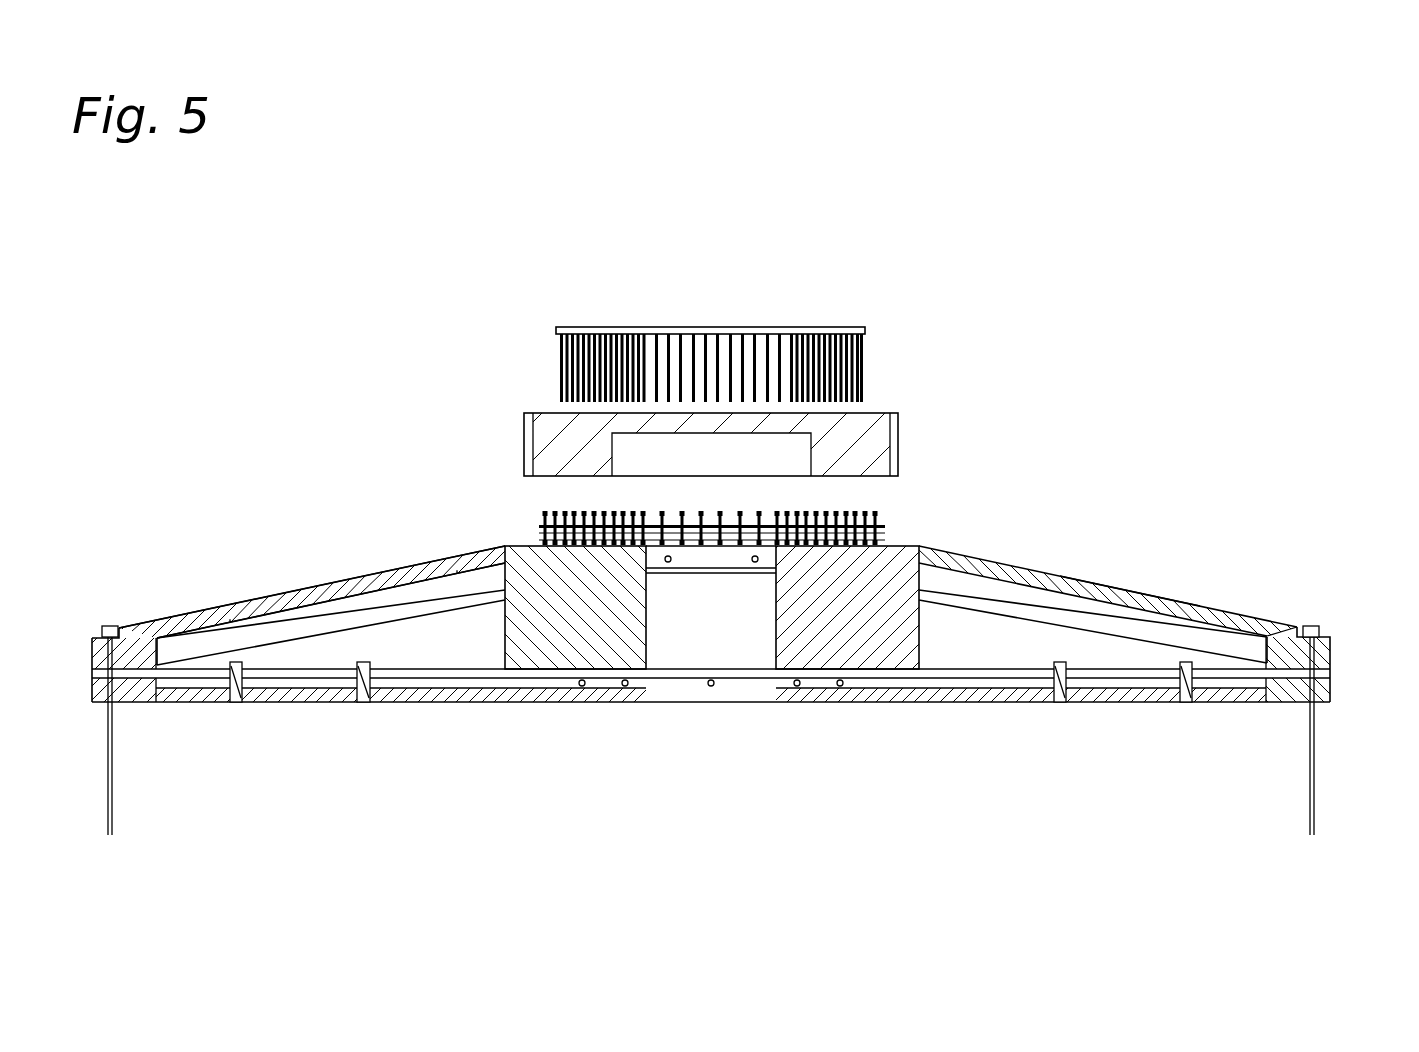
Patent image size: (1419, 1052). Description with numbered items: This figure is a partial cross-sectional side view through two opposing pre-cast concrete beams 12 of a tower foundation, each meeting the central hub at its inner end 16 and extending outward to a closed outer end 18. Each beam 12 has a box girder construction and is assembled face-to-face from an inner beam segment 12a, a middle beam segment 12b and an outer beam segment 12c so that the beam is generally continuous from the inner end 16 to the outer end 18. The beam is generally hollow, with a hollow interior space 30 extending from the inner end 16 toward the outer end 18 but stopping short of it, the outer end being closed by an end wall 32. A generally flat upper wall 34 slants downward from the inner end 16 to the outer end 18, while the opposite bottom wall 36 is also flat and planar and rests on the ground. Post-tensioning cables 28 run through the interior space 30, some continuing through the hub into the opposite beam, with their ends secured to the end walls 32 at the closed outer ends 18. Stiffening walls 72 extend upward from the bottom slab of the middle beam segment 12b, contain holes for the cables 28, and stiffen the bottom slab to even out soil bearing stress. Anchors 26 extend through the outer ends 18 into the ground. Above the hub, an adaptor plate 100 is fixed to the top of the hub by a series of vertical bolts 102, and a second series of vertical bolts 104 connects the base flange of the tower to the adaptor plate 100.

The pre-cast concrete beam 12 is at (328, 582).
The inner beam segment 12a is at (453, 555).
The middle beam segment 12b is at (280, 590).
The outer beam segment 12c is at (195, 613).
The inner end 16 is at (933, 545).
The outer end 18 is at (1297, 627).
The anchor 26 is at (1317, 628).
The post-tensioning cable 28 is at (303, 638).
The hollow interior space 30 is at (355, 608).
The end wall 32 is at (135, 630).
The upper wall 34 is at (1152, 595).
The bottom wall 36 is at (1127, 700).
The stiffening wall 72 is at (1054, 672).
The adaptor plate 100 is at (888, 410).
The vertical bolts 102 is at (540, 515).
The second series of vertical bolts 104 is at (559, 353).